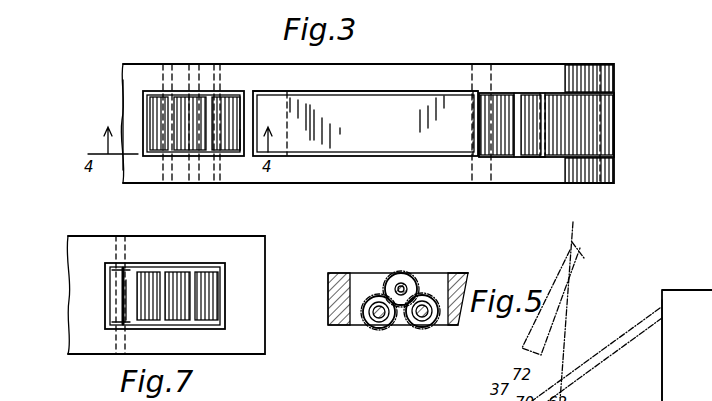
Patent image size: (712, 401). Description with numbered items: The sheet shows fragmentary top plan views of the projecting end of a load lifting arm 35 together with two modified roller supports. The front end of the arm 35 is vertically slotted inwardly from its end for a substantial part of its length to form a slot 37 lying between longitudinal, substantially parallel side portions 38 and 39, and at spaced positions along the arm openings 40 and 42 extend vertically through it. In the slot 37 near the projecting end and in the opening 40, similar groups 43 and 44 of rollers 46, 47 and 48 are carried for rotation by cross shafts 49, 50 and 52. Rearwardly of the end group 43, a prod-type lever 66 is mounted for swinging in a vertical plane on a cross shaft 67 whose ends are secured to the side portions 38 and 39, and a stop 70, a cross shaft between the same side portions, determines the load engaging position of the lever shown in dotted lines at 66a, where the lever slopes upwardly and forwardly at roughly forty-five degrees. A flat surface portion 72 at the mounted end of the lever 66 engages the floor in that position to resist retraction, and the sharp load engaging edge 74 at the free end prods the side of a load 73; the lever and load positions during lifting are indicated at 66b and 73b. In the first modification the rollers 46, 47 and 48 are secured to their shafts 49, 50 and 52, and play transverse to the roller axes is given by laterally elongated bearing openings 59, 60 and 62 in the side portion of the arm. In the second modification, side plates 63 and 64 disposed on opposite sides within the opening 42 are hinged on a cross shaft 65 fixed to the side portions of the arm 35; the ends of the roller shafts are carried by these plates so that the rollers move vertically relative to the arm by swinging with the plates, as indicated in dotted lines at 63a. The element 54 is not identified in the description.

In FIG. 3, the arm 35 is at (130, 103).
In FIG. 7, the arm 35 is at (72, 322).
In FIG. 3, the slot 37 is at (391, 95).
In FIG. 3, the side portion 38 is at (418, 76).
In FIG. 7, the side portion 38 is at (138, 250).
In FIG. 3, the side portion 39 is at (355, 172).
In FIG. 7, the side portion 39 is at (142, 352).
In FIG. 3, the opening 40 is at (241, 142).
In FIG. 7, the opening 42 is at (222, 268).
In FIG. 3, the end group of rollers 43 is at (630, 118).
In FIG. 3, the group of rollers 44 is at (203, 85).
In FIG. 3, the roller 46 is at (230, 106).
In FIG. 7, the roller 46 is at (208, 280).
In FIG. 5, the roller 46 is at (418, 328).
In FIG. 3, the roller 47 is at (158, 100).
In FIG. 7, the roller 47 is at (150, 280).
In FIG. 5, the roller 47 is at (372, 326).
In FIG. 3, the roller 48 is at (184, 102).
In FIG. 7, the roller 48 is at (177, 280).
In FIG. 5, the roller 48 is at (414, 283).
In FIG. 5, the cross shaft 49 is at (467, 275).
In FIG. 5, the cross shaft 50 is at (376, 312).
In FIG. 5, the cross shaft 52 is at (398, 285).
In FIG. 3, the spacer 54 is at (528, 174).
In FIG. 5, the bearing opening 59 is at (468, 324).
In FIG. 5, the bearing opening 60 is at (345, 302).
In FIG. 5, the bearing opening 62 is at (403, 285).
In FIG. 7, the side plate 63 is at (126, 265).
In FIG. 7, the swung position of side plate 63a is at (48, 300).
In FIG. 7, the side plate 64 is at (130, 320).
In FIG. 7, the cross shaft 65 is at (118, 282).
In FIG. 3, the prod-type lever 66 is at (325, 108).
In FIG. 5, the load engaging position of lever 66a is at (608, 348).
In FIG. 5, the lifting position of lever 66b is at (560, 270).
In FIG. 3, the cross shaft 67 is at (477, 82).
In FIG. 3, the stop 70 is at (550, 148).
In FIG. 3, the flat surface portion 72 is at (512, 160).
In FIG. 5, the load 73 is at (686, 290).
In FIG. 5, the lifted position of load 73b is at (572, 280).
In FIG. 5, the load engaging edge 74 is at (663, 310).